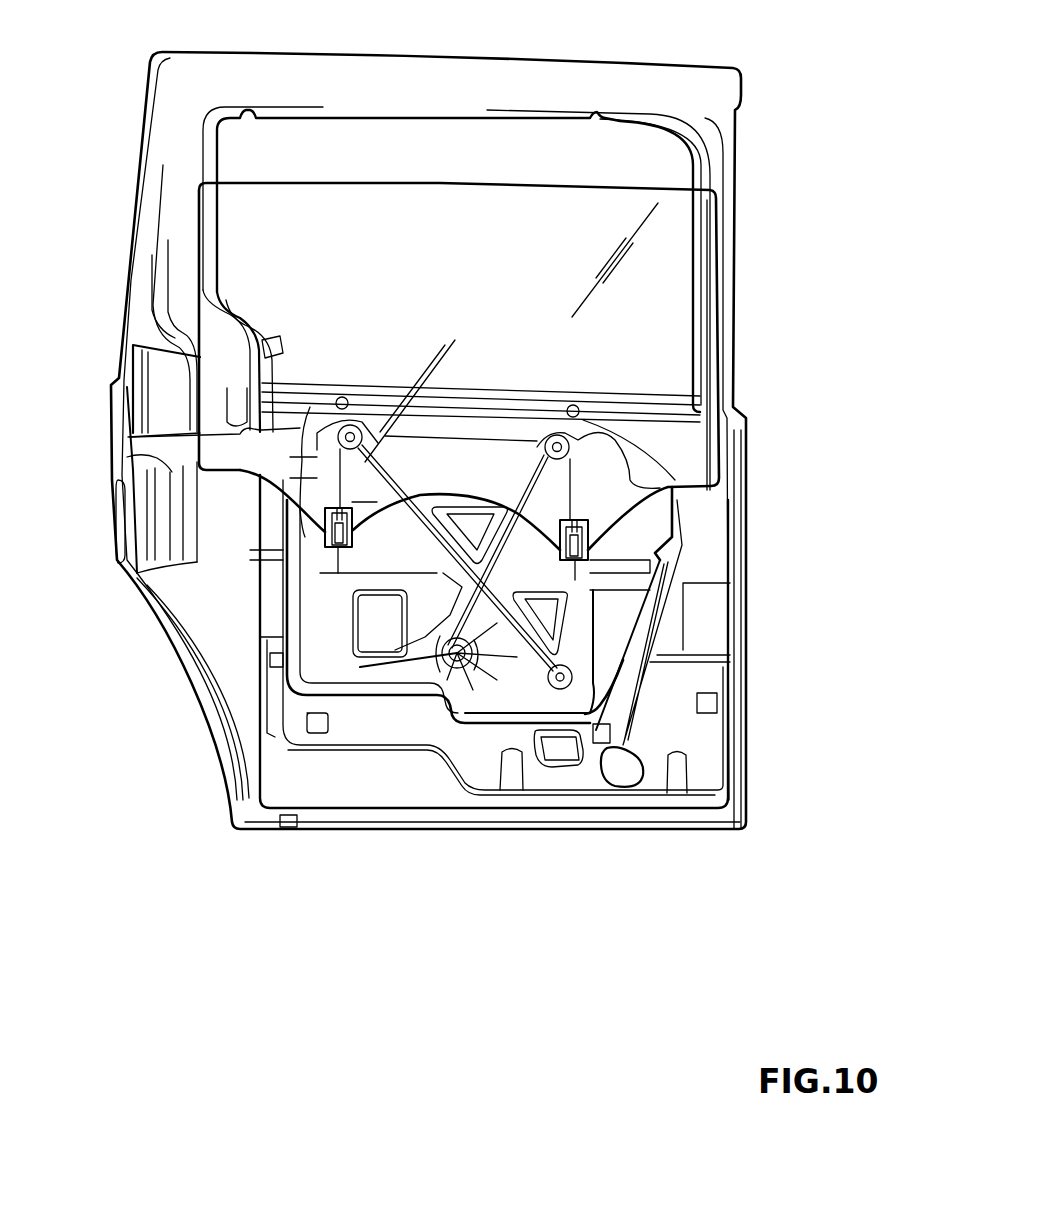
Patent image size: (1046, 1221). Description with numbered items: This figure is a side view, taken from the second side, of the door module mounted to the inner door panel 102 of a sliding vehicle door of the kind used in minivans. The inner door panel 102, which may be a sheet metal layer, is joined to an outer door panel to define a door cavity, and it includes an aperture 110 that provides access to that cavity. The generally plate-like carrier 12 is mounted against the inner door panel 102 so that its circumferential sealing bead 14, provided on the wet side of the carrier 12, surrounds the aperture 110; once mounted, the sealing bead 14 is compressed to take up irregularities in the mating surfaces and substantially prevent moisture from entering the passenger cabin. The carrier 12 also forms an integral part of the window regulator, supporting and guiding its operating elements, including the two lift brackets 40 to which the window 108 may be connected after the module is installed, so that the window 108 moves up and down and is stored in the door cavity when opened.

The inner door panel 102 is at (740, 428).
The window 108 is at (440, 183).
The aperture 110 is at (287, 598).
The circumferential sealing bead 14 is at (283, 627).
The carrier 12 is at (375, 623).
The lift bracket 40 is at (577, 540).